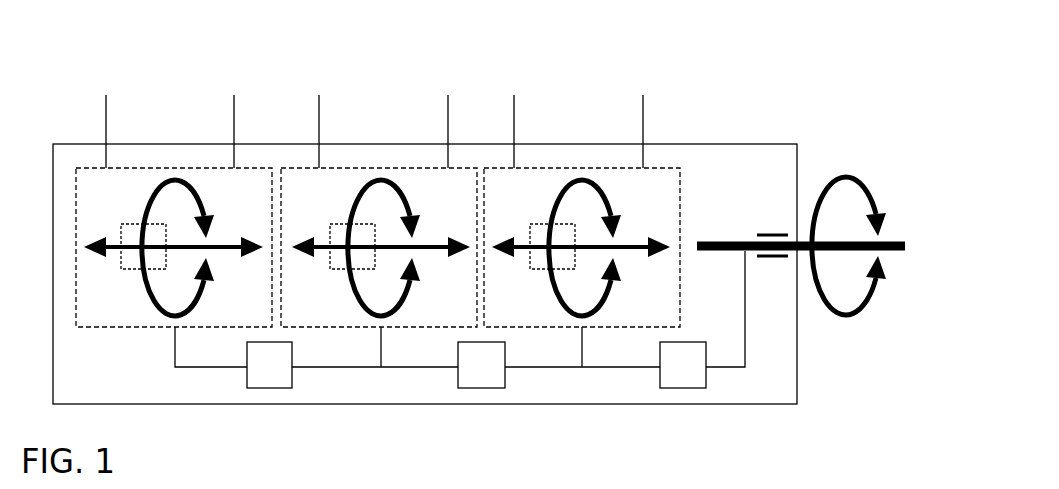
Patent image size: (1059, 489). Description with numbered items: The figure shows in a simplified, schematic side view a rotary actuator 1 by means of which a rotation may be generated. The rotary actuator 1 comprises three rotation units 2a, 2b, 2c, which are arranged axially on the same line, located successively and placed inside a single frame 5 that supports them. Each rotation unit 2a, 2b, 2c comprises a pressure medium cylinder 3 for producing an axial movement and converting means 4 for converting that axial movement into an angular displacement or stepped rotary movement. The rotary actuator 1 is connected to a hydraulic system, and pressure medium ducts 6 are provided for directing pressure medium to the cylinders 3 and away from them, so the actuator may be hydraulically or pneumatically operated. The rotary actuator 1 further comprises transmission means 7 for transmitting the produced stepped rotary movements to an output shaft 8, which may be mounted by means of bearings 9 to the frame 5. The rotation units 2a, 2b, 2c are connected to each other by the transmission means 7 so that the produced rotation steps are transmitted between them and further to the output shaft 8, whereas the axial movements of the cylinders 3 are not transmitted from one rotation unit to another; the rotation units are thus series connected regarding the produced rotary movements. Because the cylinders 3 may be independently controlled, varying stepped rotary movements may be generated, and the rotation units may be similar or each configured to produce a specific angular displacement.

The rotary actuator 1 is at (138, 42).
The rotation unit 2a is at (122, 166).
The rotation unit 2b is at (338, 166).
The rotation unit 2c is at (531, 166).
The pressure medium cylinder 3 is at (110, 262).
The converting means 4 is at (128, 222).
The frame 5 is at (72, 144).
The pressure medium duct 6 is at (105, 117).
The transmission means 7 is at (267, 375).
The output shaft 8 is at (718, 238).
The bearings 9 is at (770, 232).